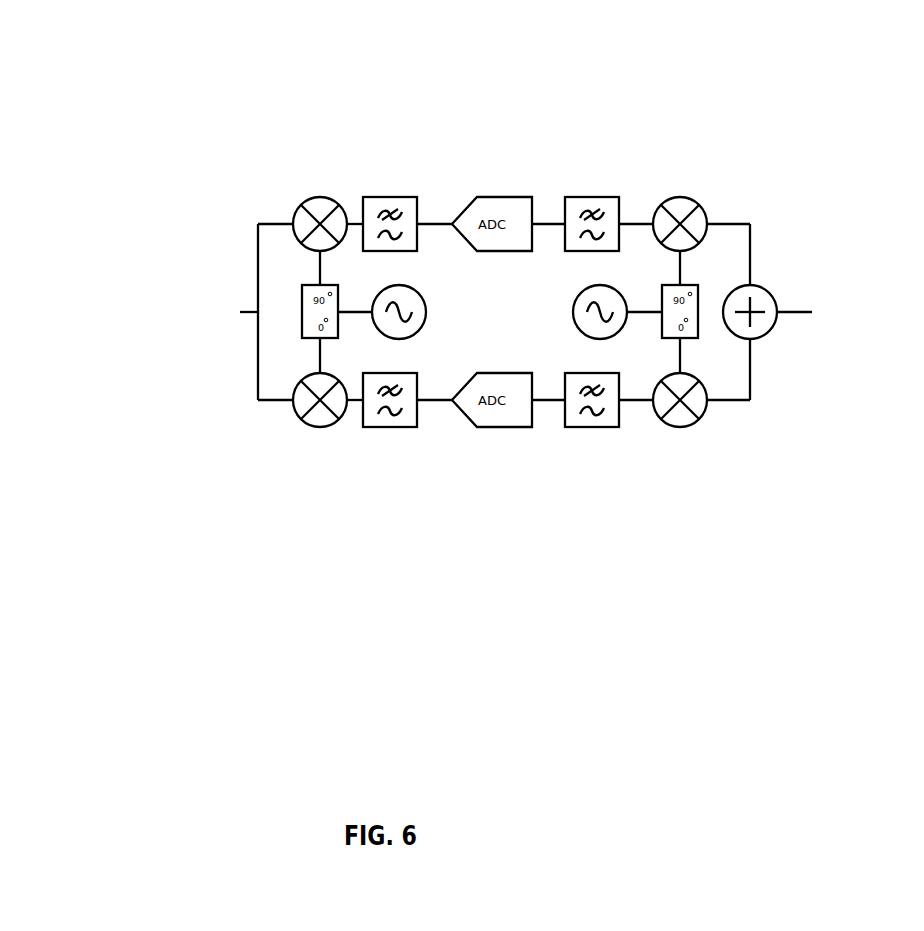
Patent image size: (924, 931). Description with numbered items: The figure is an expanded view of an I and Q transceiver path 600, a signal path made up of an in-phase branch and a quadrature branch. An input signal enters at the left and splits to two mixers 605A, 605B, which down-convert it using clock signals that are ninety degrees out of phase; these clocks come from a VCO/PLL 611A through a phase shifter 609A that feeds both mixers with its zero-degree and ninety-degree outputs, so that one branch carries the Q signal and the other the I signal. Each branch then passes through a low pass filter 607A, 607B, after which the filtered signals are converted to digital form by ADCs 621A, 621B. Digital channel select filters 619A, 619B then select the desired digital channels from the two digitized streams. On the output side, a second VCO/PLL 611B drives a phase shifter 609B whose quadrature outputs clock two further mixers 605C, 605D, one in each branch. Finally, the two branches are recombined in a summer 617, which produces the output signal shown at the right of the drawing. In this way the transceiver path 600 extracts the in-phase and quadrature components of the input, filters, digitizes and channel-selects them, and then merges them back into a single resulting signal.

The I and Q transceiver path 600 is at (90, 93).
The mixer 605A is at (320, 196).
The mixer 605B is at (313, 425).
The mixer 605C is at (678, 196).
The mixer 605D is at (673, 426).
The low pass filter 607A is at (408, 197).
The low pass filter 607B is at (400, 427).
The phase shifter 609A is at (302, 325).
The phase shifter 609B is at (698, 320).
The VCO/PLL 611A is at (418, 293).
The VCO/PLL 611B is at (581, 293).
The summer 617 is at (762, 290).
The digital channel select filter 619A is at (590, 197).
The digital channel select filter 619B is at (587, 427).
The ADC 621A is at (495, 197).
The ADC 621B is at (490, 427).